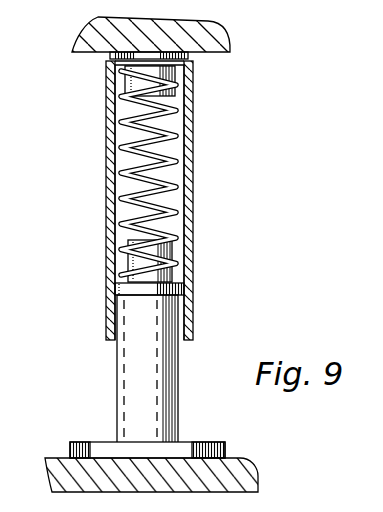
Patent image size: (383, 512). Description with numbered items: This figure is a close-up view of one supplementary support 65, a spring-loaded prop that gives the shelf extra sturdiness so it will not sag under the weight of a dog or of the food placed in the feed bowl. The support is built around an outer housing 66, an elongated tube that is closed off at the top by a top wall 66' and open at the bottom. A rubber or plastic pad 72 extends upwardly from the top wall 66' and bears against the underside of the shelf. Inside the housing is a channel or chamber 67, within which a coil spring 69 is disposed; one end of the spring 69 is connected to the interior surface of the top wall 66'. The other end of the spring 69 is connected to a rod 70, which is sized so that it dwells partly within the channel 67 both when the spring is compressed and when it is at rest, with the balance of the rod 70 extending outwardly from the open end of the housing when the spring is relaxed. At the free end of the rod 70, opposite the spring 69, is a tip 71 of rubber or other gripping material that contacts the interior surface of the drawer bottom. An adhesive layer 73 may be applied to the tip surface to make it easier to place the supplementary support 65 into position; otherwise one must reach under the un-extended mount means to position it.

The supplementary support 65 is at (79, 228).
The outer housing 66 is at (131, 200).
The top wall 66' is at (164, 57).
The channel or chamber 67 is at (174, 173).
The coil spring 69 is at (193, 136).
The rod 70 is at (176, 378).
The tip 71 is at (90, 453).
The pad 72 is at (111, 57).
The adhesive layer 73 is at (193, 442).